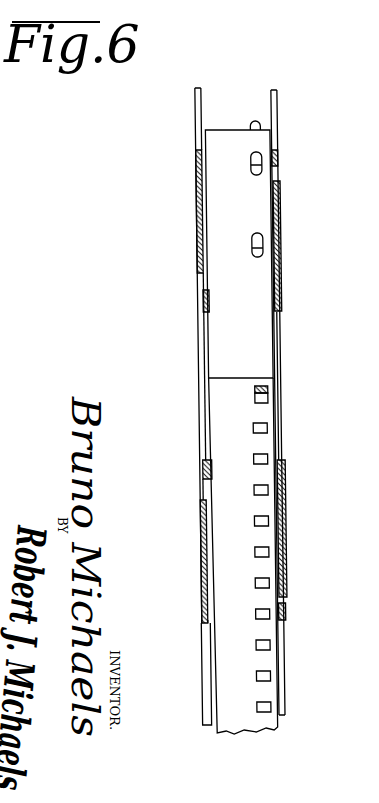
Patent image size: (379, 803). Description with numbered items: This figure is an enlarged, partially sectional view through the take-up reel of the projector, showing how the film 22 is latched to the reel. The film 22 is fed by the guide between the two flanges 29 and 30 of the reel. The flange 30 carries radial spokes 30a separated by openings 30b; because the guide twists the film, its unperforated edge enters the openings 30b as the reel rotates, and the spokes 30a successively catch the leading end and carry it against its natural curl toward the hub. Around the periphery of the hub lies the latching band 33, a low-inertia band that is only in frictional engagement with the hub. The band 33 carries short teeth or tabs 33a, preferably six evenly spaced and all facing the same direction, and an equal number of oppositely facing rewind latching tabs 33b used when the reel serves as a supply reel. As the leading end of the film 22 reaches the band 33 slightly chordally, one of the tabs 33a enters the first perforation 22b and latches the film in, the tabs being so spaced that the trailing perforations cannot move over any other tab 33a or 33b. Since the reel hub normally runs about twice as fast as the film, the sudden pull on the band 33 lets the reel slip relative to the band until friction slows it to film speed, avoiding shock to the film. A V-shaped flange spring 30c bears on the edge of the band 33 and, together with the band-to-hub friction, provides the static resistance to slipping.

The film 22 is at (210, 570).
The first perforation 22b is at (258, 399).
The flange 29 is at (285, 323).
The flange 30 is at (197, 240).
The radial spokes 30a is at (196, 184).
The openings 30b is at (207, 348).
The V-shaped flange spring 30c is at (202, 466).
The latching band 33 is at (243, 222).
The teeth 33a is at (270, 152).
The rewind latching tabs 33b is at (263, 121).